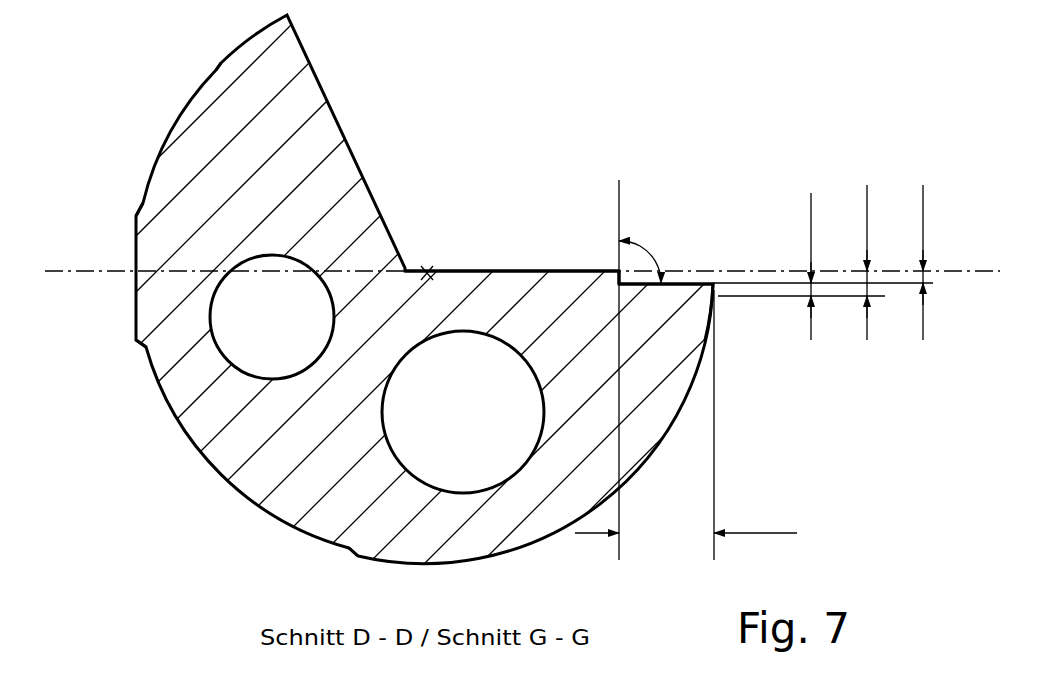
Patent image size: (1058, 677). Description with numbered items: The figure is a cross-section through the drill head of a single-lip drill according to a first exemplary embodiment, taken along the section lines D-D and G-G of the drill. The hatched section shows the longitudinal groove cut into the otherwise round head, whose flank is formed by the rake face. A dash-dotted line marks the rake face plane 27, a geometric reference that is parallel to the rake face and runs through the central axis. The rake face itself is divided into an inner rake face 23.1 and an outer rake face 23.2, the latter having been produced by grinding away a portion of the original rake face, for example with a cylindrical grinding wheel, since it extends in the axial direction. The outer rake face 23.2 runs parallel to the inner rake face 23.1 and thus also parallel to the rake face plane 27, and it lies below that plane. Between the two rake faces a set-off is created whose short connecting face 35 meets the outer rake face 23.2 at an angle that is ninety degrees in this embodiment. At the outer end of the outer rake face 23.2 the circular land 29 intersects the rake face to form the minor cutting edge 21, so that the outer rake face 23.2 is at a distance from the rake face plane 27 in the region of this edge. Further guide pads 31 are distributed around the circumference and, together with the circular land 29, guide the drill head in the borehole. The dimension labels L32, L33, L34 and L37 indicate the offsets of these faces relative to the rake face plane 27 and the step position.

The minor cutting edge 21 is at (717, 284).
The inner rake face 23.1 is at (490, 270).
The outer rake face 23.2 is at (680, 283).
The rake face plane 27 is at (112, 272).
The circular land 29 is at (720, 297).
The guide pads 31 is at (137, 214).
The face 35 is at (641, 282).
The dimension L32 is at (908, 262).
The dimension L33 is at (851, 262).
The dimension L34 is at (686, 520).
The dimension L37 is at (795, 266).